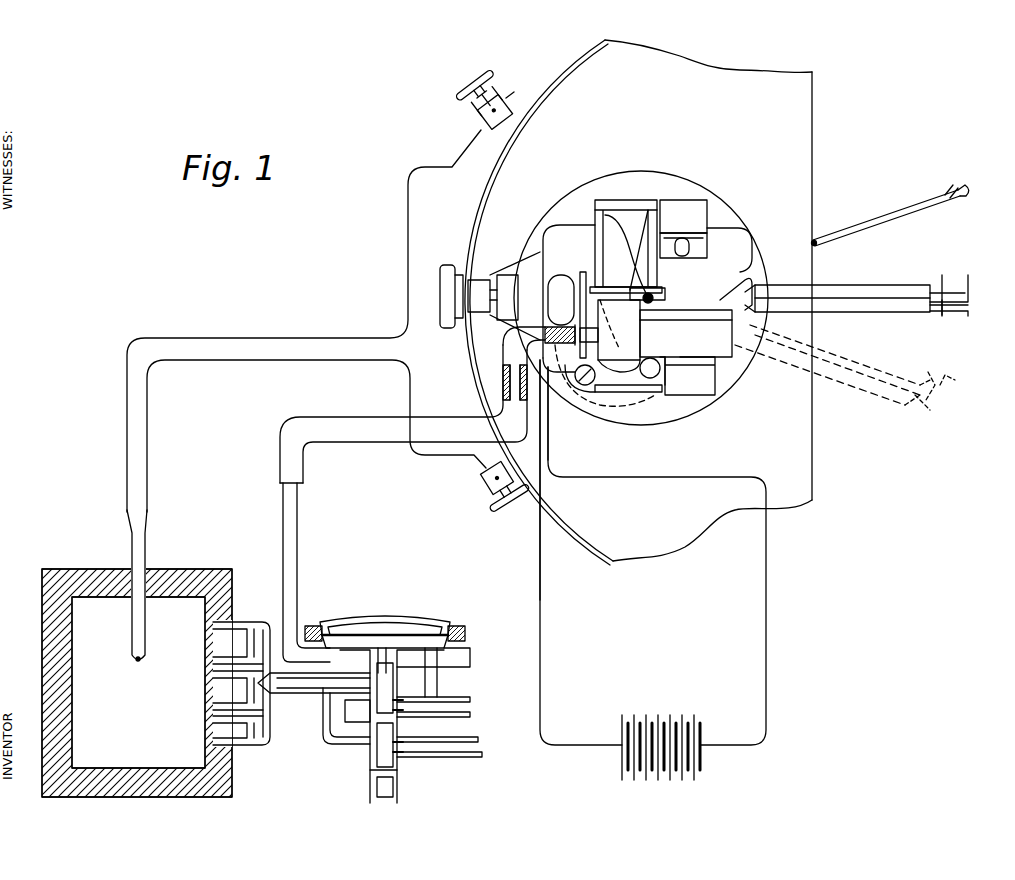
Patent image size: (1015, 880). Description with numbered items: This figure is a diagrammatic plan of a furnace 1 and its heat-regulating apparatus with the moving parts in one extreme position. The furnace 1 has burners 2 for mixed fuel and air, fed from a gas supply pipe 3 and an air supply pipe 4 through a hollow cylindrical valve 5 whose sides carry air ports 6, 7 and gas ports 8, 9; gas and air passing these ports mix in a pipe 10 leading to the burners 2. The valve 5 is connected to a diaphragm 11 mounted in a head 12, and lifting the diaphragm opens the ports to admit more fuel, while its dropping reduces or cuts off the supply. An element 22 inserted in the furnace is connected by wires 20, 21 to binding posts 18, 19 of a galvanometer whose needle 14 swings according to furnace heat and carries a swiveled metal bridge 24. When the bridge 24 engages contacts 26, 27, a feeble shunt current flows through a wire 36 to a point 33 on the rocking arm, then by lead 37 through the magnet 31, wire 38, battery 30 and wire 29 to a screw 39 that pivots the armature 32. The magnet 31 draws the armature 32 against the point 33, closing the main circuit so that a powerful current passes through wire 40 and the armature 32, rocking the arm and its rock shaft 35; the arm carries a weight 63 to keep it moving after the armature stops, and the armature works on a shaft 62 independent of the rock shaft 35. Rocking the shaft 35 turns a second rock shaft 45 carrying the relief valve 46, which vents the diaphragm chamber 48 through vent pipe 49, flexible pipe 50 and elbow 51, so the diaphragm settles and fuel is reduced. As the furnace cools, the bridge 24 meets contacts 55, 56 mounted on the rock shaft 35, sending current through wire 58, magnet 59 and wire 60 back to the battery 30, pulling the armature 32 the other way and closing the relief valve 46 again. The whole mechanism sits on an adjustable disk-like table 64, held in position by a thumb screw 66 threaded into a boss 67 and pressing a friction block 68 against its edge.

The furnace 1 is at (40, 605).
The burners 2 is at (210, 664).
The gas supply pipe 3 is at (482, 750).
The air supply pipe 4 is at (470, 706).
The hollow cylindrical valve 5 is at (377, 790).
The air port 6 is at (404, 708).
The air port 7 is at (370, 683).
The gas port 8 is at (404, 744).
The gas port 9 is at (346, 716).
The pipe 10 is at (287, 690).
The diaphragm 11 is at (343, 624).
The head 12 is at (388, 618).
The needle 14 is at (876, 220).
The binding post 18 is at (498, 104).
The binding post 19 is at (503, 493).
The wire 20 is at (322, 340).
The wire 21 is at (340, 362).
The element 22 is at (146, 545).
The metal bridge 24 is at (957, 182).
The contact 26 is at (970, 313).
The contact 27 is at (949, 317).
The main circuit conductor 29 is at (766, 638).
The battery 30 is at (648, 778).
The magnet 31 is at (648, 246).
The armature 32 is at (685, 333).
The point 33 is at (655, 304).
The rock shaft 35 is at (755, 292).
The wire 36 is at (738, 283).
The wire lead 37 is at (632, 258).
The wire 38 is at (546, 602).
The screw 39 is at (571, 323).
The main circuit wire 40 is at (550, 428).
The rock shaft 45 is at (617, 330).
The relief valve 46 is at (580, 400).
The diaphragm chamber 48 is at (452, 645).
The vent pipe 49 is at (283, 586).
The flexible pipe 50 is at (355, 420).
The elbow 51 is at (503, 350).
The contact 55 is at (969, 276).
The contact 56 is at (942, 278).
The wire 58 is at (615, 374).
The magnet 59 is at (623, 336).
The wire 60 is at (619, 358).
The shaft 62 is at (566, 283).
The weight 63 is at (690, 365).
The table 64 is at (735, 395).
The thumb screw 66 is at (445, 270).
The boss 67 is at (479, 296).
The friction block 68 is at (515, 296).